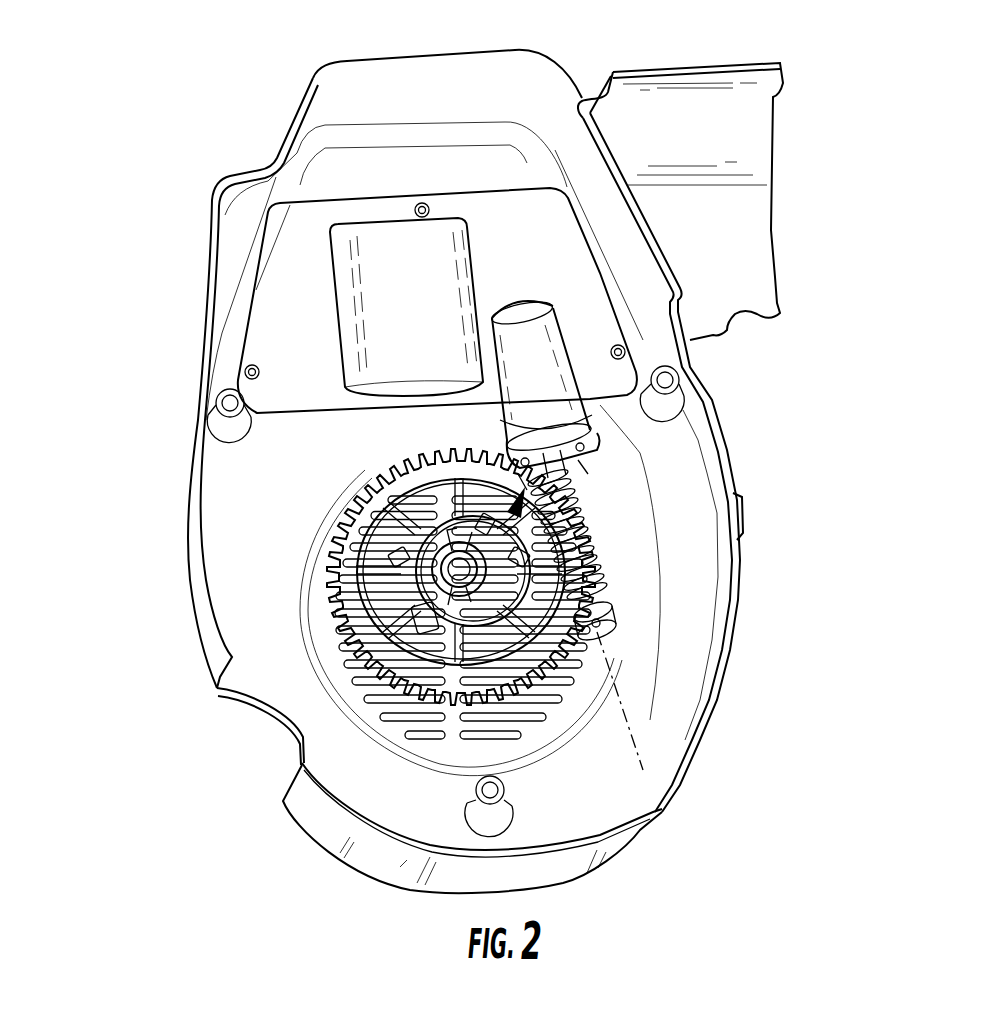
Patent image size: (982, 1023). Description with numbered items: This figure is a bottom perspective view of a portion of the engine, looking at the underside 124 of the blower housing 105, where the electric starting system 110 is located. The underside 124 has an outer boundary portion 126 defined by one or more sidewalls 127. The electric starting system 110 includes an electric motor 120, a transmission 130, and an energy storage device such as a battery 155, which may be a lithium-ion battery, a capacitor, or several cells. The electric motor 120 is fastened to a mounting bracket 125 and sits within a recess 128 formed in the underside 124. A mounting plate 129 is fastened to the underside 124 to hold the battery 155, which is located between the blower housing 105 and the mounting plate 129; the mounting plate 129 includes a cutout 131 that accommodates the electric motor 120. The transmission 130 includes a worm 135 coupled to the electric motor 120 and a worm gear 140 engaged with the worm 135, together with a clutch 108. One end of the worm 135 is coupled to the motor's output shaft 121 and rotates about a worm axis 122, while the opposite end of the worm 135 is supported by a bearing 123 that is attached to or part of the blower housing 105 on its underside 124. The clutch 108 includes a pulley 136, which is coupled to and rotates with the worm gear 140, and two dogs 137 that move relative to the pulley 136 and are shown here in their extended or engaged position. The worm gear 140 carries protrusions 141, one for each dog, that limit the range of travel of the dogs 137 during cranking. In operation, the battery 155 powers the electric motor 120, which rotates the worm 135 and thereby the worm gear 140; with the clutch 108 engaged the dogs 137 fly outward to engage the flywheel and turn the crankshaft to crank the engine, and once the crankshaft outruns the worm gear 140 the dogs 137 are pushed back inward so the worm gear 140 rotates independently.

The blower housing 105 is at (212, 268).
The clutch 108 is at (428, 563).
The electric starting system 110 is at (143, 467).
The electric motor 120 is at (605, 358).
The output shaft 121 is at (548, 440).
The worm axis 122 is at (640, 722).
The bearing 123 is at (605, 617).
The underside 124 is at (593, 813).
The mounting bracket 125 is at (683, 400).
The boundary portion 126 is at (702, 521).
The sidewall 127 is at (745, 498).
The recess 128 is at (535, 320).
The mounting plate 129 is at (533, 200).
The transmission 130 is at (429, 586).
The cutout 131 is at (546, 380).
The worm 135 is at (485, 518).
The pulley 136 is at (430, 623).
The dogs 137 is at (518, 458).
The worm gear 140 is at (338, 517).
The protrusions 141 is at (433, 620).
The battery 155 is at (382, 258).